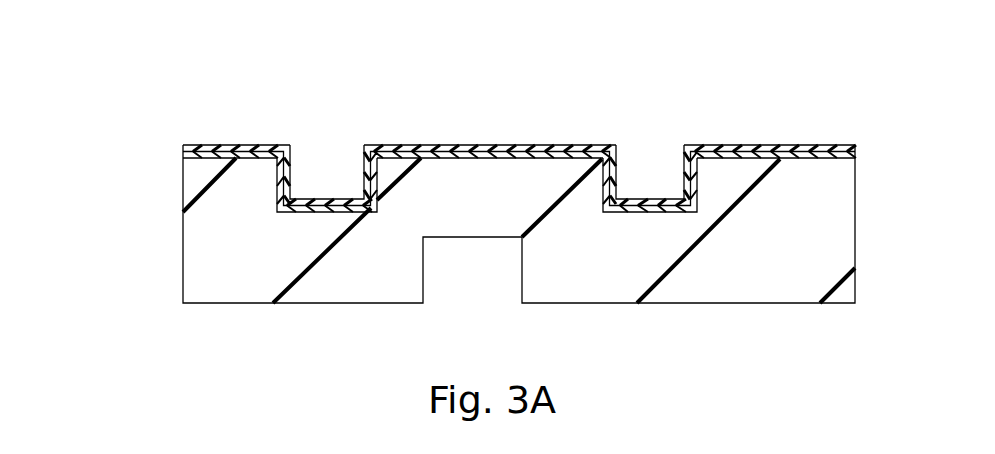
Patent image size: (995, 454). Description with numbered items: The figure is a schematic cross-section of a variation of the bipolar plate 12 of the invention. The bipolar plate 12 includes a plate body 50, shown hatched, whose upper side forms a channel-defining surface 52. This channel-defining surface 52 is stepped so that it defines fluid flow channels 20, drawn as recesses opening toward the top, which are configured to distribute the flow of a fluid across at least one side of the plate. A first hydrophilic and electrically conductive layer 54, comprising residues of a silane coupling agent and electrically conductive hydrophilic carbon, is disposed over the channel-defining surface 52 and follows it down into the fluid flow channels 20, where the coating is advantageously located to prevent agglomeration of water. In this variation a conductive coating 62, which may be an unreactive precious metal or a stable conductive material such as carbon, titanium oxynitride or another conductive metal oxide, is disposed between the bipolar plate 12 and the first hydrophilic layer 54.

The bipolar plate 12 is at (176, 245).
The fluid flow channels 20 is at (302, 148).
The plate body 50 is at (242, 277).
The channel-defining surface 52 is at (295, 206).
The first hydrophilic and electrically conductive layer 54 is at (510, 152).
The conductive coating 62 is at (427, 157).